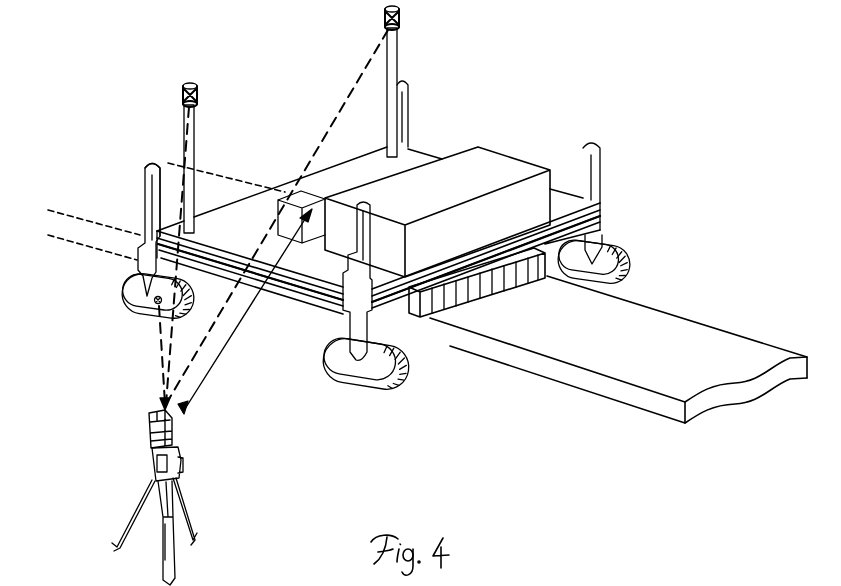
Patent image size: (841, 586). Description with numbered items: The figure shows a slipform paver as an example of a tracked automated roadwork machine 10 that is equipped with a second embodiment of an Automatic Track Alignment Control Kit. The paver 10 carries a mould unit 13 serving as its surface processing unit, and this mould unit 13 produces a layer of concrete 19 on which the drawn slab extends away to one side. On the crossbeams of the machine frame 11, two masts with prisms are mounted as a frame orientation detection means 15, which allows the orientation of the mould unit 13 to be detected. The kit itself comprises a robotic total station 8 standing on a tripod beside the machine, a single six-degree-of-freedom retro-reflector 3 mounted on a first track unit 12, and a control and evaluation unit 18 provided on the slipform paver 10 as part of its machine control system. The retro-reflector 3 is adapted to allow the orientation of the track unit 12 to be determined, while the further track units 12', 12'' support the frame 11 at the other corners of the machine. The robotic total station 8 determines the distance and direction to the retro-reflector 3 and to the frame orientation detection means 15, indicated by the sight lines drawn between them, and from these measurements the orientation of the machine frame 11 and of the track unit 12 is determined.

The 6DOF retro-reflector 3 is at (152, 303).
The robotic total station 8 is at (118, 413).
The tracked automated roadwork machine 10 is at (560, 131).
The machine frame 11 is at (427, 160).
The first track unit 12 is at (118, 242).
The wheel 12' is at (375, 320).
The wheel 12'' is at (640, 265).
The mould unit 13 is at (493, 287).
The frame orientation detection means 15 is at (388, 25).
The control and evaluation unit 18 is at (303, 190).
The layer of concrete 19 is at (683, 338).